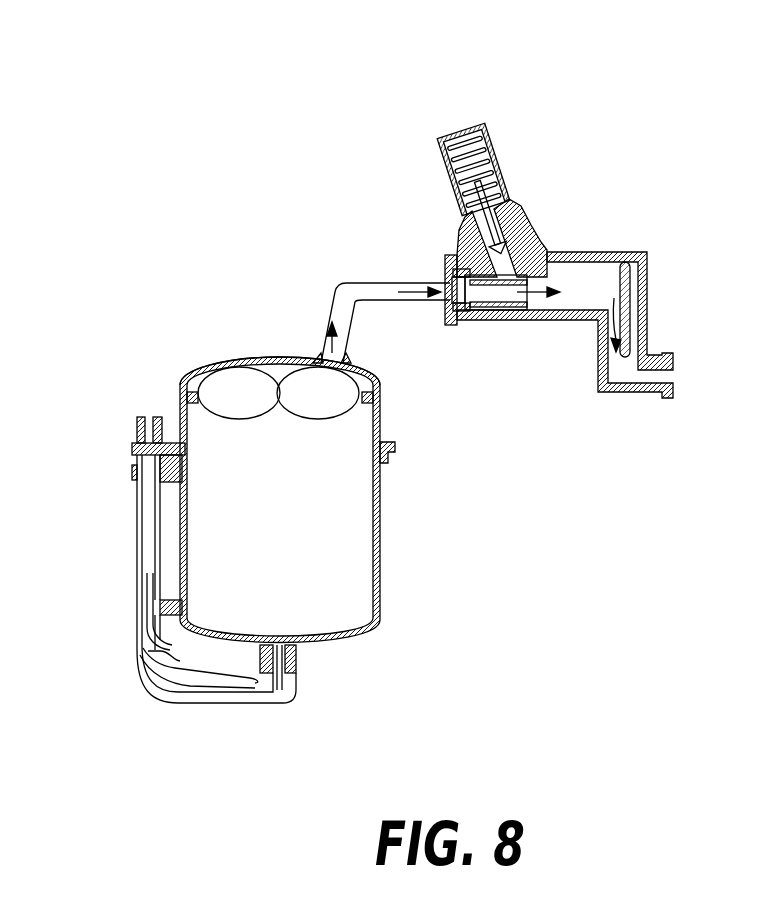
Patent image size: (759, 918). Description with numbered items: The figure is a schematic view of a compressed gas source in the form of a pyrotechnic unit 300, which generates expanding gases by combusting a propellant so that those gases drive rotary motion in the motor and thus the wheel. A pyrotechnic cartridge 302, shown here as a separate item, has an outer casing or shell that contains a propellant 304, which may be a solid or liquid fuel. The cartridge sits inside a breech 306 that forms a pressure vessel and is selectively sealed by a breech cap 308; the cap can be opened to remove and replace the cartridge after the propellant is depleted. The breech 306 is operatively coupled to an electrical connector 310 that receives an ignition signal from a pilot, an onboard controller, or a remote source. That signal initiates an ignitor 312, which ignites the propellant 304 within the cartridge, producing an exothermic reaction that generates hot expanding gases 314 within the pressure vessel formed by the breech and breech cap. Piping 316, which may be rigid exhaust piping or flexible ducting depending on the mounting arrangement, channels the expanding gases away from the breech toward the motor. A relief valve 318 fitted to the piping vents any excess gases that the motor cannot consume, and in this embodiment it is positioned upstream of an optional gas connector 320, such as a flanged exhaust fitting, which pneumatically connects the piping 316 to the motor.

The pyrotechnic unit 300 is at (621, 96).
The pyrotechnic cartridge 302 is at (317, 500).
The propellant 304 is at (297, 516).
The breech 306 is at (382, 510).
The breech cap 308 is at (263, 358).
The electrical connector 310 is at (143, 415).
The ignitor 312 is at (283, 677).
The hot expanding gases 314 is at (297, 405).
The piping 316 is at (340, 287).
The relief valve 318 is at (492, 148).
The gas connector 320 is at (672, 398).